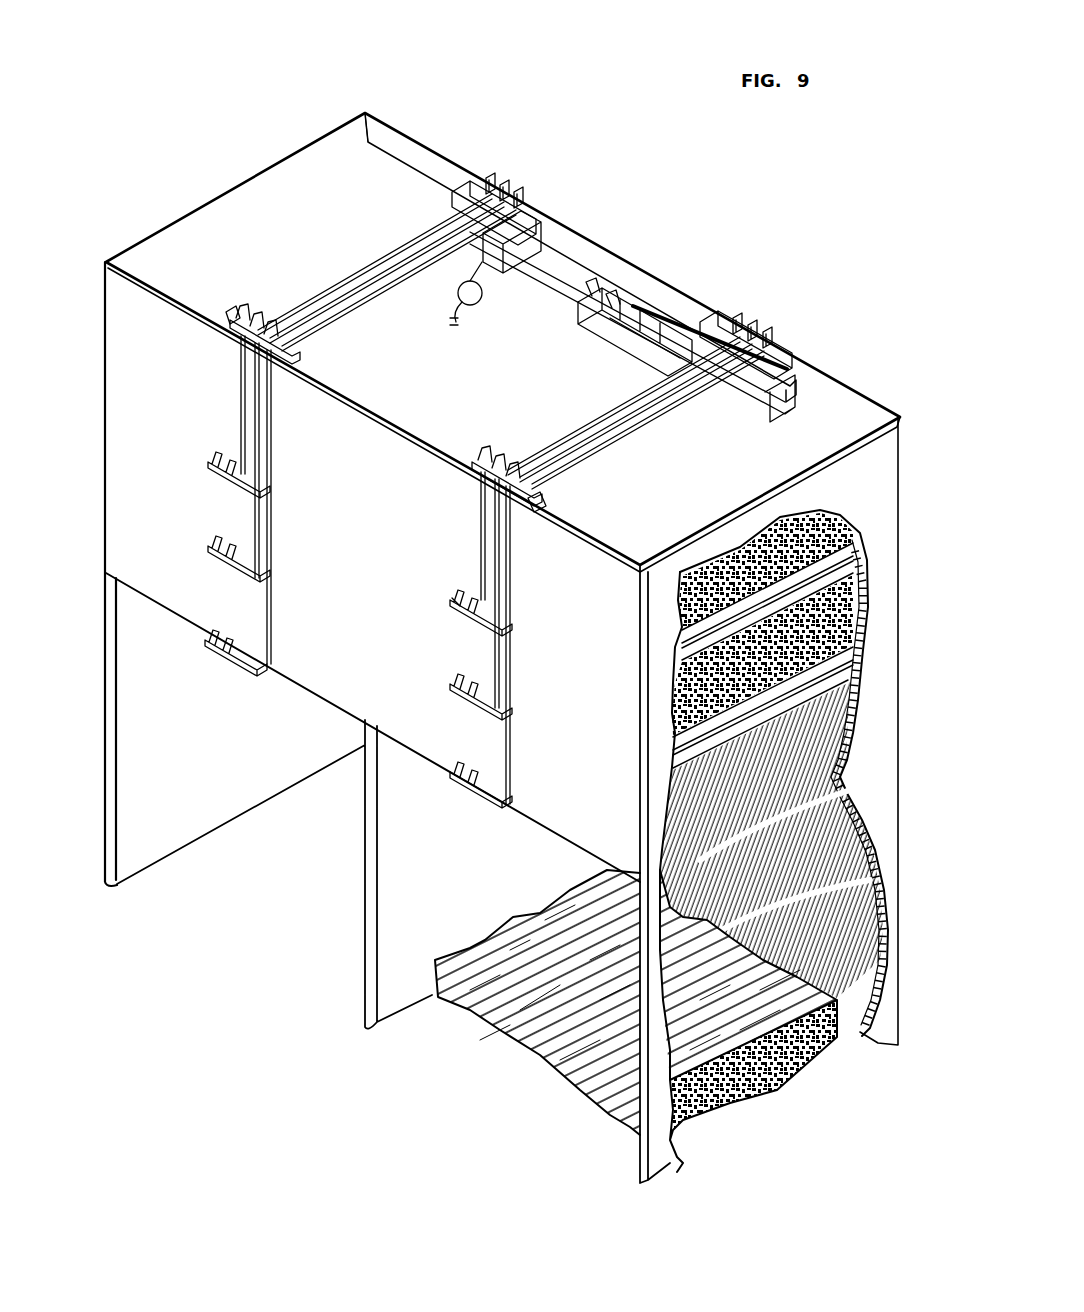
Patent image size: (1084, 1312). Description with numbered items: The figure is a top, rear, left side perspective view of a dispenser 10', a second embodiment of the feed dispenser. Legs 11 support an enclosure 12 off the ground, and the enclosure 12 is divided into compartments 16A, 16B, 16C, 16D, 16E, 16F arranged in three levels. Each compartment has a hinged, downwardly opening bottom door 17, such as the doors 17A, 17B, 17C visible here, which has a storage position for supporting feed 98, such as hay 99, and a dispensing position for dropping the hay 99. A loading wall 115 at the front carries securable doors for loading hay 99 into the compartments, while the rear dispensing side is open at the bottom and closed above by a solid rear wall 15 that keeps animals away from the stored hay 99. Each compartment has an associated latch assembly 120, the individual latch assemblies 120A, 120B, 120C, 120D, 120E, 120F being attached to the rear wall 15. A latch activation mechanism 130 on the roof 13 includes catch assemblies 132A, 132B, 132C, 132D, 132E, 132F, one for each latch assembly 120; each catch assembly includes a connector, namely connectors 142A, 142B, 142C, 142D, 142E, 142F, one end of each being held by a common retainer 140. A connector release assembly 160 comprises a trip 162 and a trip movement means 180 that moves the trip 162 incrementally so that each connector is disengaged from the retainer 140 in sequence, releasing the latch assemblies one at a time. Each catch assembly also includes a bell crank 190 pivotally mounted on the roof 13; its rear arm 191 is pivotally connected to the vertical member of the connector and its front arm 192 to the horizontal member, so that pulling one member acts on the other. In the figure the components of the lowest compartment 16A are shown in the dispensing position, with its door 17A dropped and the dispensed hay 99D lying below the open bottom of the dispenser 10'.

The dispenser 10' is at (503, 598).
The legs 11 is at (199, 817).
The enclosure 12 is at (188, 112).
The roof 13 is at (190, 230).
The rear wall 15 is at (356, 700).
The compartment 16A is at (480, 738).
The compartment 16B is at (478, 648).
The compartment 16C is at (476, 568).
The compartment 16D is at (130, 520).
The compartment 16E is at (128, 424).
The compartment 16F is at (118, 316).
The bottom door 17 is at (878, 945).
The bottom door 17A is at (872, 905).
The bottom door 17B is at (858, 660).
The bottom door 17C is at (858, 556).
The feed 98 is at (855, 580).
The hay 99 is at (668, 640).
The dispensed hay 99D is at (766, 1100).
The loading wall 115 is at (903, 380).
The latch assembly 120 is at (462, 596).
The latch assembly 120A is at (448, 770).
The latch assembly 120B is at (450, 688).
The latch assembly 120C is at (450, 606).
The latch assembly 120D is at (206, 646).
The latch assembly 120E is at (208, 560).
The latch assembly 120F is at (208, 474).
The latch activation mechanism 130 is at (405, 82).
The catch assembly 132A is at (772, 318).
The catch assembly 132B is at (755, 306).
The catch assembly 132C is at (742, 300).
The catch assembly 132D is at (528, 195).
The catch assembly 132E is at (512, 178).
The catch assembly 132F is at (500, 168).
The common retainer 140 is at (428, 134).
The connector 142A is at (612, 418).
The connector 142B is at (640, 412).
The connector 142C is at (652, 380).
The connector 142D is at (440, 222).
The connector 142E is at (418, 240).
The connector 142F is at (358, 264).
The connector release assembly 160 is at (838, 418).
The trip 162 is at (580, 340).
The trip movement means 180 is at (496, 270).
The bell crank 190 is at (268, 318).
The rear arm 191 is at (236, 318).
The front arm 192 is at (512, 502).